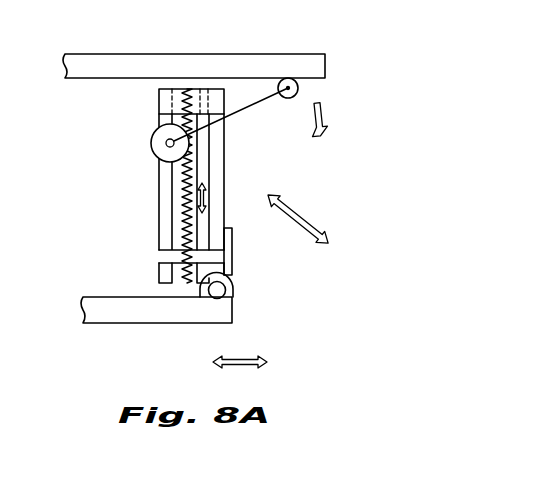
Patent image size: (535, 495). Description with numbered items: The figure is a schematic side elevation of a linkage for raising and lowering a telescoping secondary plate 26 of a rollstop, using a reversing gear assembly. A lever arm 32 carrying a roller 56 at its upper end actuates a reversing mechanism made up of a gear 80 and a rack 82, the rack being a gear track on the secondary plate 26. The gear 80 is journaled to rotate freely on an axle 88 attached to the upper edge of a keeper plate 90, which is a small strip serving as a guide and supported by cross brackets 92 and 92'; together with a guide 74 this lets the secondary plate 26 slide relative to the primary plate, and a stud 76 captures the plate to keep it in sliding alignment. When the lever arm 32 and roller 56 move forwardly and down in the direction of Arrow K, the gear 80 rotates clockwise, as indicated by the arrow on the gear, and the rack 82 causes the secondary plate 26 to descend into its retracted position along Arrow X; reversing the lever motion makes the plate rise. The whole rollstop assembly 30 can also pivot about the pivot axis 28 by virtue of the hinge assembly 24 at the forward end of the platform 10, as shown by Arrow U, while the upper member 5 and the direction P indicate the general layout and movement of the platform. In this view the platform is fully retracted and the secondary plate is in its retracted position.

The upper rail / support plate 5 is at (147, 62).
The platform 10 is at (122, 312).
The hinge assembly 24 is at (243, 281).
The secondary plate 26 is at (180, 182).
The pivot axis 28 is at (226, 292).
The adjusting assembly 30 is at (262, 148).
The lever arm 32 is at (266, 97).
The roller 56 is at (287, 77).
The guide 74 is at (165, 245).
The stud 76 is at (233, 258).
The gear 80 is at (195, 155).
The rack 82 is at (203, 186).
The axle 88 is at (151, 143).
The keeper plate 90 is at (166, 160).
The cross bracket 92 is at (156, 102).
The cross bracket 92' is at (152, 275).
The Arrow K is at (322, 118).
The Arrow U is at (308, 207).
The displacement direction of base P is at (240, 359).
The Arrow X is at (172, 218).